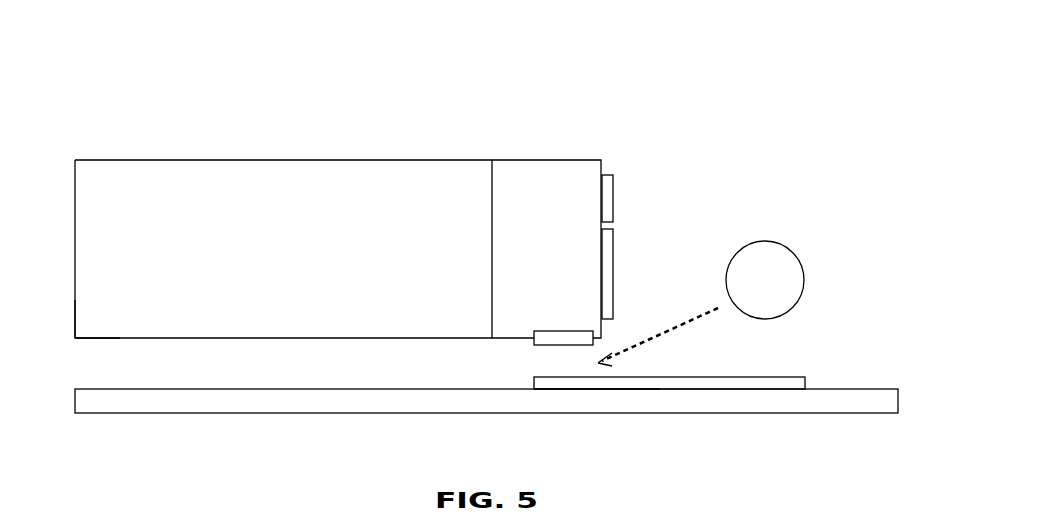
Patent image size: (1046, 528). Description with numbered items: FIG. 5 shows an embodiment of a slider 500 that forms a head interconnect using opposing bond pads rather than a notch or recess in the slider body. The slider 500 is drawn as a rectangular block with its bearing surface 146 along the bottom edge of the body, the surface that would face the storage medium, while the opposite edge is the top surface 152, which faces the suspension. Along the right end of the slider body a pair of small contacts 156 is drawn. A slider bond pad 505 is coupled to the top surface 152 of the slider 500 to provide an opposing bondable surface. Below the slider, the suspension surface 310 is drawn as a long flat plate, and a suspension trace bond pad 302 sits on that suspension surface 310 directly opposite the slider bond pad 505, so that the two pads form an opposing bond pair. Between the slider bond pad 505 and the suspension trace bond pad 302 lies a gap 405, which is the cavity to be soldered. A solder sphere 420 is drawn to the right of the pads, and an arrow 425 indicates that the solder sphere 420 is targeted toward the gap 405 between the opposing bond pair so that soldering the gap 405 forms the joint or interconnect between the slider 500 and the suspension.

The slider 500 is at (707, 82).
The bearing surface 146 is at (251, 160).
The connector contacts 156 is at (603, 162).
The top surface 152 is at (80, 340).
The slider bond pad 505 is at (553, 341).
The solder sphere 420 is at (795, 247).
The arrow 425 is at (667, 337).
The suspension trace bond pad 302 is at (795, 377).
The gap 405 is at (567, 360).
The suspension surface 310 is at (843, 389).